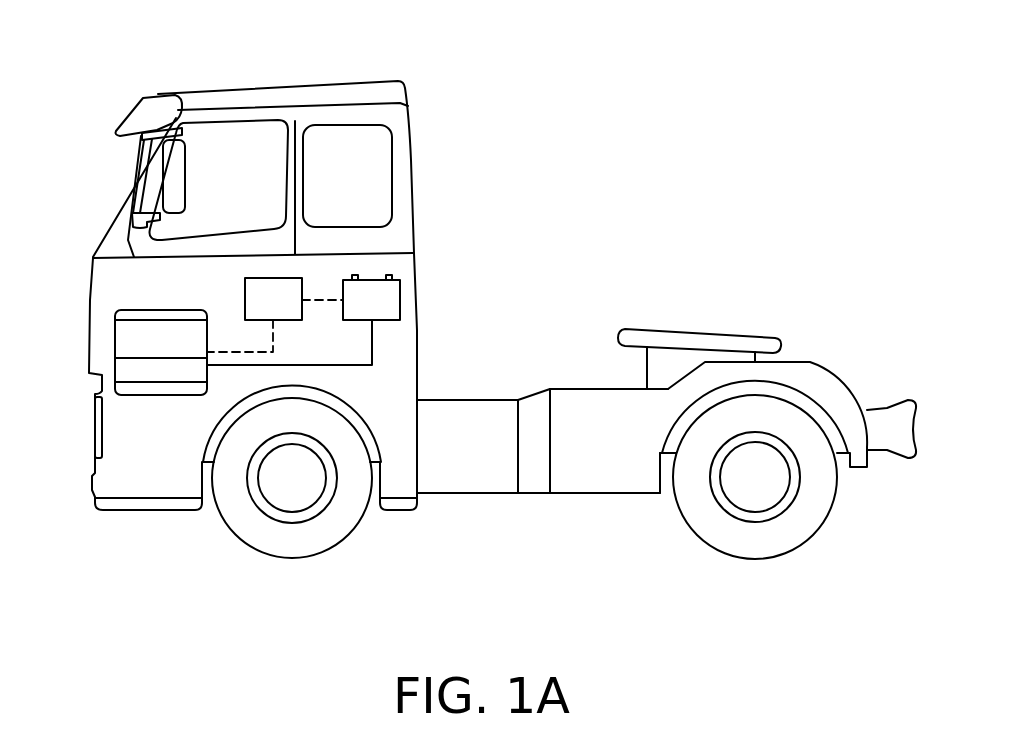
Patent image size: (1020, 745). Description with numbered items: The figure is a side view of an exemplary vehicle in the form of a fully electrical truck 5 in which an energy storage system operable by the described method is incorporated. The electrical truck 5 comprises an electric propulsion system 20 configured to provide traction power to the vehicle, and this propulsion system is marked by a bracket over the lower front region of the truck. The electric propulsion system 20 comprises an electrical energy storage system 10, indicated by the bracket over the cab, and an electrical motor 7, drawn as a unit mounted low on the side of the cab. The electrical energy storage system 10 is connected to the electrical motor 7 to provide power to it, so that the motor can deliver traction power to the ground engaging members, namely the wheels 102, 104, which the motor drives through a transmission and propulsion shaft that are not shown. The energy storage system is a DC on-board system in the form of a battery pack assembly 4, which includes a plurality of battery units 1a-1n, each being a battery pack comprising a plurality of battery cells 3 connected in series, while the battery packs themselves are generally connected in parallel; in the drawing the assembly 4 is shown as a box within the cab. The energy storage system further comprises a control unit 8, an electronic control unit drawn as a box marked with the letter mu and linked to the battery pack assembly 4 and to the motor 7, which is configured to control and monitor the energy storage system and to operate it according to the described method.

The electrical truck 5 is at (488, 73).
The electrical energy storage system 10 is at (401, 610).
The electric propulsion system 20 is at (114, 397).
The electrical motor 7 is at (158, 370).
The control unit 8 is at (287, 320).
The battery pack assembly 4 is at (395, 314).
The battery cells 3 is at (395, 314).
The battery units 1a-1n is at (400, 300).
The wheel 102 is at (292, 477).
The wheel 104 is at (757, 477).